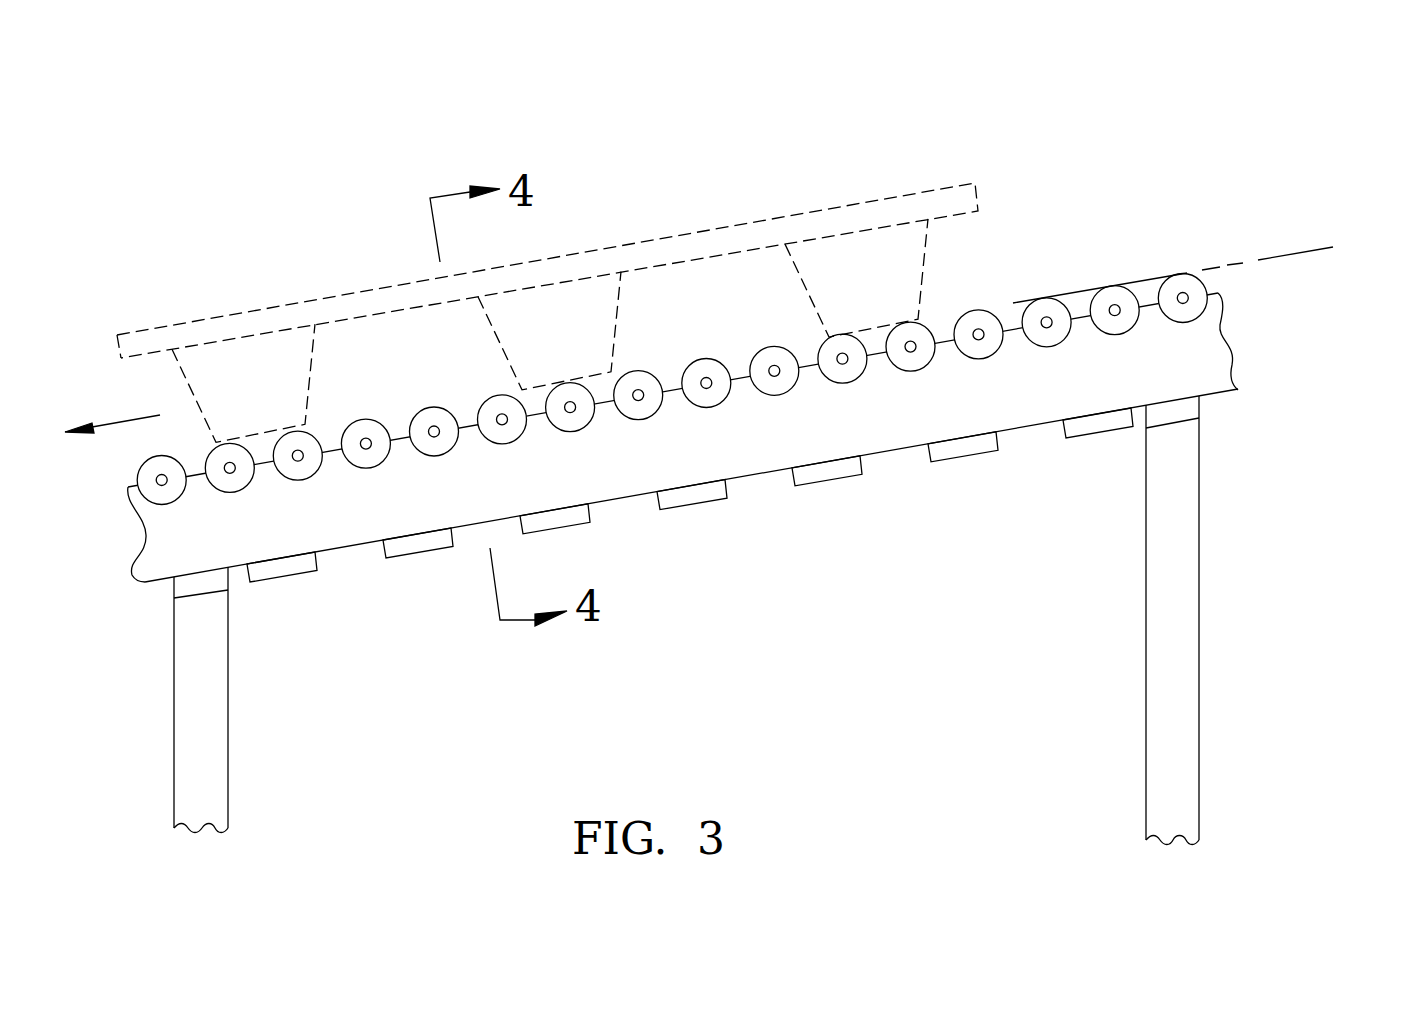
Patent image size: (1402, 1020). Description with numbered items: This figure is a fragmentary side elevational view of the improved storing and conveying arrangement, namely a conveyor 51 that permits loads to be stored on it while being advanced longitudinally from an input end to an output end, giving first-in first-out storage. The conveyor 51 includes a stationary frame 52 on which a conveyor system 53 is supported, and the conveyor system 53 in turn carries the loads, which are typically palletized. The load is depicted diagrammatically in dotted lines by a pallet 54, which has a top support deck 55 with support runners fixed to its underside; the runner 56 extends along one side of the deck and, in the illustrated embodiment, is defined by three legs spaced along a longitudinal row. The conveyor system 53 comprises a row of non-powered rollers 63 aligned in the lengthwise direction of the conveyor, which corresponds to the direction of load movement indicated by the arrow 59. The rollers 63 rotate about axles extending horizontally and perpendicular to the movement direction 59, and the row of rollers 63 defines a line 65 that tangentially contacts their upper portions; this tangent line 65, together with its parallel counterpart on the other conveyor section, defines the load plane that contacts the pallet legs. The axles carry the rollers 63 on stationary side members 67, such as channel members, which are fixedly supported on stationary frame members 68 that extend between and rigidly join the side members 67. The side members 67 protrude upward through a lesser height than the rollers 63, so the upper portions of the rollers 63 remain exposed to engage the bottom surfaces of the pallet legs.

The conveyor 51 is at (723, 490).
The stationary frame 52 is at (1191, 605).
The conveyor system 53 is at (1052, 262).
The pallet 54 is at (547, 246).
The top support deck 55 is at (767, 225).
The runner 56 is at (242, 317).
The arrow 59 is at (110, 423).
The rollers 63 is at (432, 412).
The line 65 is at (1292, 253).
The side members 67 is at (906, 433).
The stationary frame members 68 is at (568, 520).